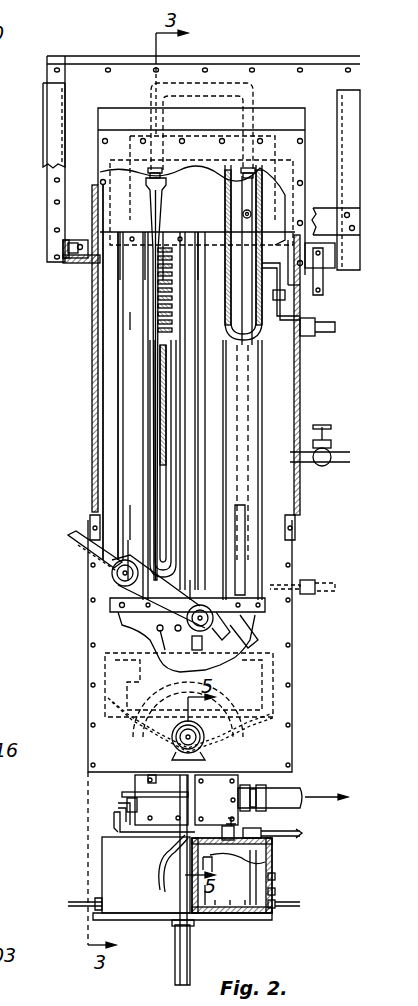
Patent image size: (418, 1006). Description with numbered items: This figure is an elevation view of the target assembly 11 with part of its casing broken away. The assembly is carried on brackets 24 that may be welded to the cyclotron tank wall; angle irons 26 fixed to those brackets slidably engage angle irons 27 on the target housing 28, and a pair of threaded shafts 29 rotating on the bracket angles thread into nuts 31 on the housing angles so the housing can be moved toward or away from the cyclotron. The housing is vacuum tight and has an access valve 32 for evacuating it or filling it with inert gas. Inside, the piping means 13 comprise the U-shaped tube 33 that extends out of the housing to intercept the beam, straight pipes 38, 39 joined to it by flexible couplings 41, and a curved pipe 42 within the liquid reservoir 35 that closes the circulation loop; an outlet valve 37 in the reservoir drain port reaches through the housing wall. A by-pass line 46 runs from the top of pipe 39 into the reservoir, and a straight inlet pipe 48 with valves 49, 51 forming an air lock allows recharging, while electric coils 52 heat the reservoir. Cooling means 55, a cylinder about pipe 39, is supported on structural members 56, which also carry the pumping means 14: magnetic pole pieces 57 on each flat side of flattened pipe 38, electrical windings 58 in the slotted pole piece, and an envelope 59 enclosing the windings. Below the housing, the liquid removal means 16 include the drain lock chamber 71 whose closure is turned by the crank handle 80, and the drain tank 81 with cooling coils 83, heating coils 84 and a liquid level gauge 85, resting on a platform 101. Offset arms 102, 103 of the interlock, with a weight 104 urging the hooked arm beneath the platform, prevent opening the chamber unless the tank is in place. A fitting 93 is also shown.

The target assembly 11 is at (303, 396).
The piping means 13 is at (166, 208).
The pumping means 14 is at (108, 450).
The liquid removal means 16 is at (190, 879).
The brackets 24 is at (48, 142).
The angle irons 26 is at (328, 280).
The angle irons 27 is at (93, 270).
The target housing 28 is at (96, 396).
The threaded shafts 29 is at (66, 248).
The nuts 31 is at (82, 240).
The access valve 32 is at (320, 466).
The U-shaped tube 33 is at (213, 83).
The liquid reservoir 35 is at (100, 700).
The outlet valve 37 is at (205, 742).
The straight pipe 38 is at (148, 510).
The straight pipe 39 is at (236, 284).
The flexible couplings 41 is at (240, 172).
The curved pipe 42 is at (158, 706).
The by-pass line 46 is at (243, 214).
The inlet pipe 48 is at (70, 545).
The valve 49 is at (112, 580).
The valve 51 is at (206, 602).
The electric coils 52 is at (272, 712).
The cooling means 55 is at (262, 388).
The structural members 56 is at (108, 230).
The magnetic pole piece 57 is at (123, 348).
The electrical windings 58 is at (172, 266).
The envelope 59 is at (165, 400).
The drain lock chamber 71 is at (224, 809).
The crank handle 80 is at (122, 794).
The drain tank 81 is at (115, 877).
The cooling coils 83 is at (276, 908).
The heating coils 84 is at (276, 880).
The liquid level gauge 85 is at (262, 830).
The outlet pipe 93 is at (293, 790).
The platform 101 is at (162, 920).
The offset arm 102 is at (116, 806).
The offset arm 103 is at (176, 968).
The weight 104 is at (114, 820).